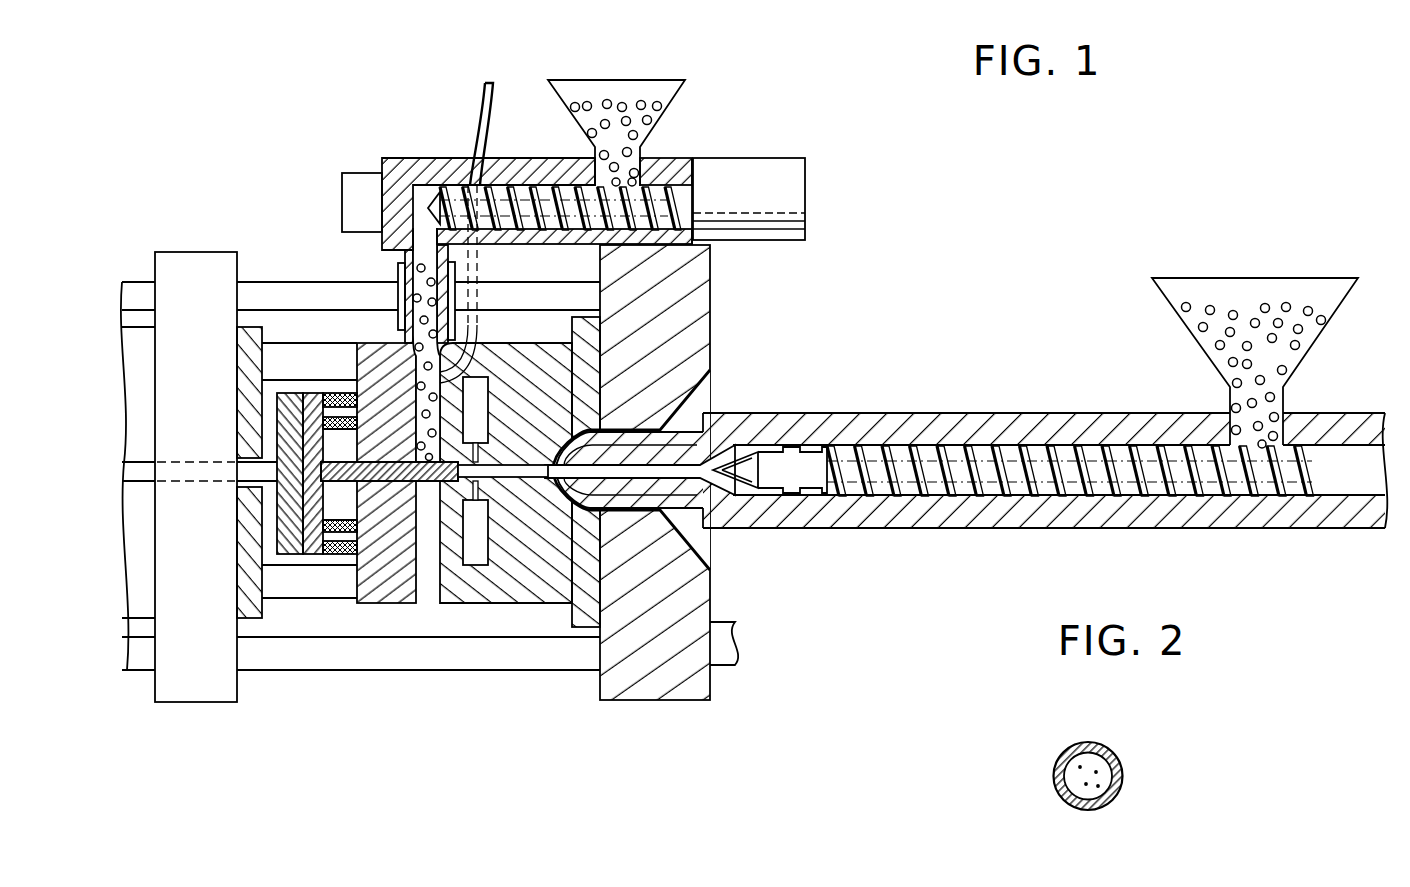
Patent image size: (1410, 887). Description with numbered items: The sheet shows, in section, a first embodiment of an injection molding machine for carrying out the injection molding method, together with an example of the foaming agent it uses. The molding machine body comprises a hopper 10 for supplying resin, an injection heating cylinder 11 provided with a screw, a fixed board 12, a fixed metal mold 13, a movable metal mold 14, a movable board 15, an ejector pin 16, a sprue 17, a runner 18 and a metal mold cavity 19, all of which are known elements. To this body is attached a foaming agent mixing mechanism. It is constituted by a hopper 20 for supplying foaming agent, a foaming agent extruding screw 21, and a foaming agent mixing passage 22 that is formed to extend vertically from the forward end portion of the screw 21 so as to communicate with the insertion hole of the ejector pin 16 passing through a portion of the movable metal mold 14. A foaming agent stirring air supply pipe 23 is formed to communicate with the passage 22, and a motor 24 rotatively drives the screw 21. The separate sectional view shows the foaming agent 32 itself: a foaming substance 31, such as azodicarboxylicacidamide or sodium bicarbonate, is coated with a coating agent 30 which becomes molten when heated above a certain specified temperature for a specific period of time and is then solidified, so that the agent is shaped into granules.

In FIG. 1, the hopper for supplying resin 10 is at (1283, 278).
In FIG. 1, the injection heating cylinder 11 is at (992, 413).
In FIG. 1, the fixed board 12 is at (658, 700).
In FIG. 1, the fixed metal mold 13 is at (586, 600).
In FIG. 1, the movable metal mold 14 is at (385, 603).
In FIG. 1, the movable board 15 is at (203, 702).
In FIG. 1, the ejector pin 16 is at (417, 481).
In FIG. 1, the sprue 17 is at (528, 478).
In FIG. 1, the runner 18 is at (518, 482).
In FIG. 1, the metal mold cavity 19 is at (488, 412).
In FIG. 1, the hopper for supplying foaming agent 20 is at (650, 80).
In FIG. 1, the foaming agent extruding screw 21 is at (524, 186).
In FIG. 1, the foaming agent mixing passage 22 is at (422, 400).
In FIG. 1, the foaming agent stirring air supply pipe 23 is at (470, 118).
In FIG. 1, the motor 24 is at (783, 158).
In FIG. 2, the coating agent 30 is at (1122, 767).
In FIG. 2, the foaming substance 31 is at (1094, 792).
In FIG. 1, the foaming agent 32 is at (662, 104).
In FIG. 2, the foaming agent 32 is at (1126, 766).